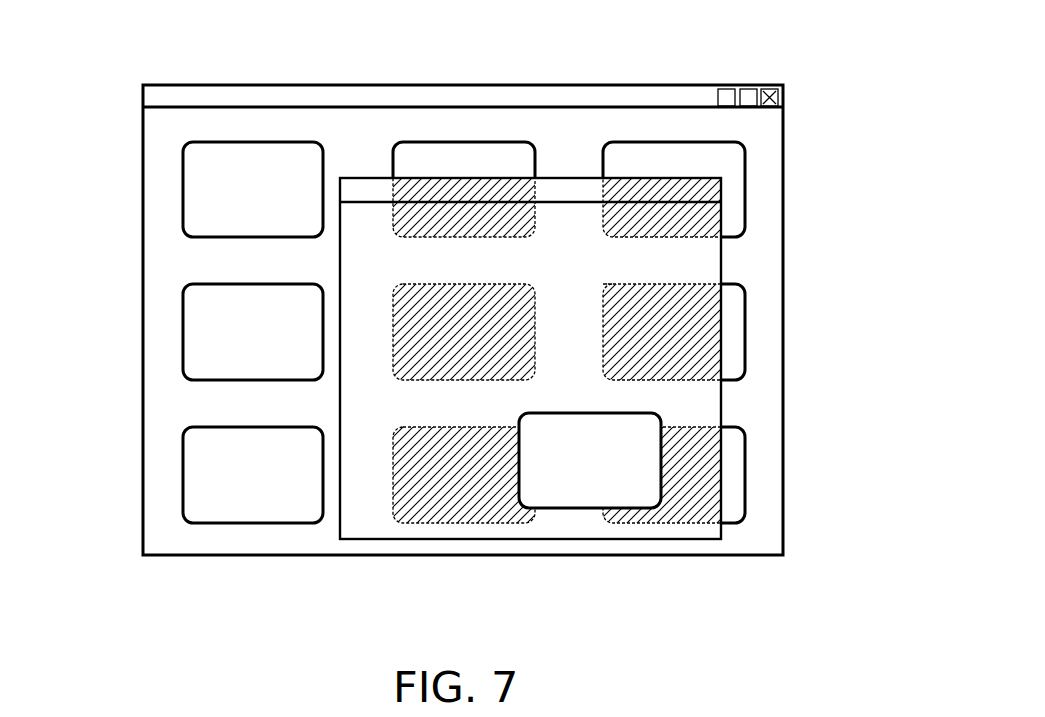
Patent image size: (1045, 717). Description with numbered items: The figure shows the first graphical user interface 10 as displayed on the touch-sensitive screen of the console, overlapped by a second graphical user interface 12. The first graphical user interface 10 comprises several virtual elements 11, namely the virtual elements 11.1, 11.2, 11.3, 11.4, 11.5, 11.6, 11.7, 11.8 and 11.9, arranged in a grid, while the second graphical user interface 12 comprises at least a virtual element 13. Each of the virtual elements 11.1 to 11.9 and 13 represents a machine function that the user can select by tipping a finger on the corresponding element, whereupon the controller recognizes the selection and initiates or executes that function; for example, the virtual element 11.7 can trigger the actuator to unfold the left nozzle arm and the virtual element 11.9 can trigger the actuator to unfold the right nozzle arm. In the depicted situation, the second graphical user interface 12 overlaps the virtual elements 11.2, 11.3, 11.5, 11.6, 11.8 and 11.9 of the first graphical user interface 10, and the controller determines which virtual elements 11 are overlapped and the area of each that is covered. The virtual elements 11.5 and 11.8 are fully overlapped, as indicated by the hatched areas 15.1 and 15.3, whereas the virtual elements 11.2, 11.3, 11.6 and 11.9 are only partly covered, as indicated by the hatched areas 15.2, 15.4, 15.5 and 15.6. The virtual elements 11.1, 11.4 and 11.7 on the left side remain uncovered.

The first graphical user interface 10 is at (152, 275).
The virtual elements 11 is at (158, 124).
The virtual element 11.1 is at (193, 190).
The virtual element 11.2 is at (490, 157).
The virtual element 11.3 is at (733, 223).
The virtual element 11.4 is at (193, 338).
The virtual element 11.5 is at (575, 444).
The virtual element 11.6 is at (733, 367).
The virtual element 11.7 is at (193, 470).
The virtual element 11.8 is at (460, 525).
The virtual element 11.9 is at (733, 488).
The second graphical user interface 12 is at (561, 222).
The virtual element 13 is at (583, 433).
The area 15.1 is at (440, 508).
The area 15.2 is at (680, 495).
The area 15.3 is at (395, 352).
The area 15.4 is at (703, 335).
The area 15.5 is at (475, 187).
The area 15.6 is at (705, 190).